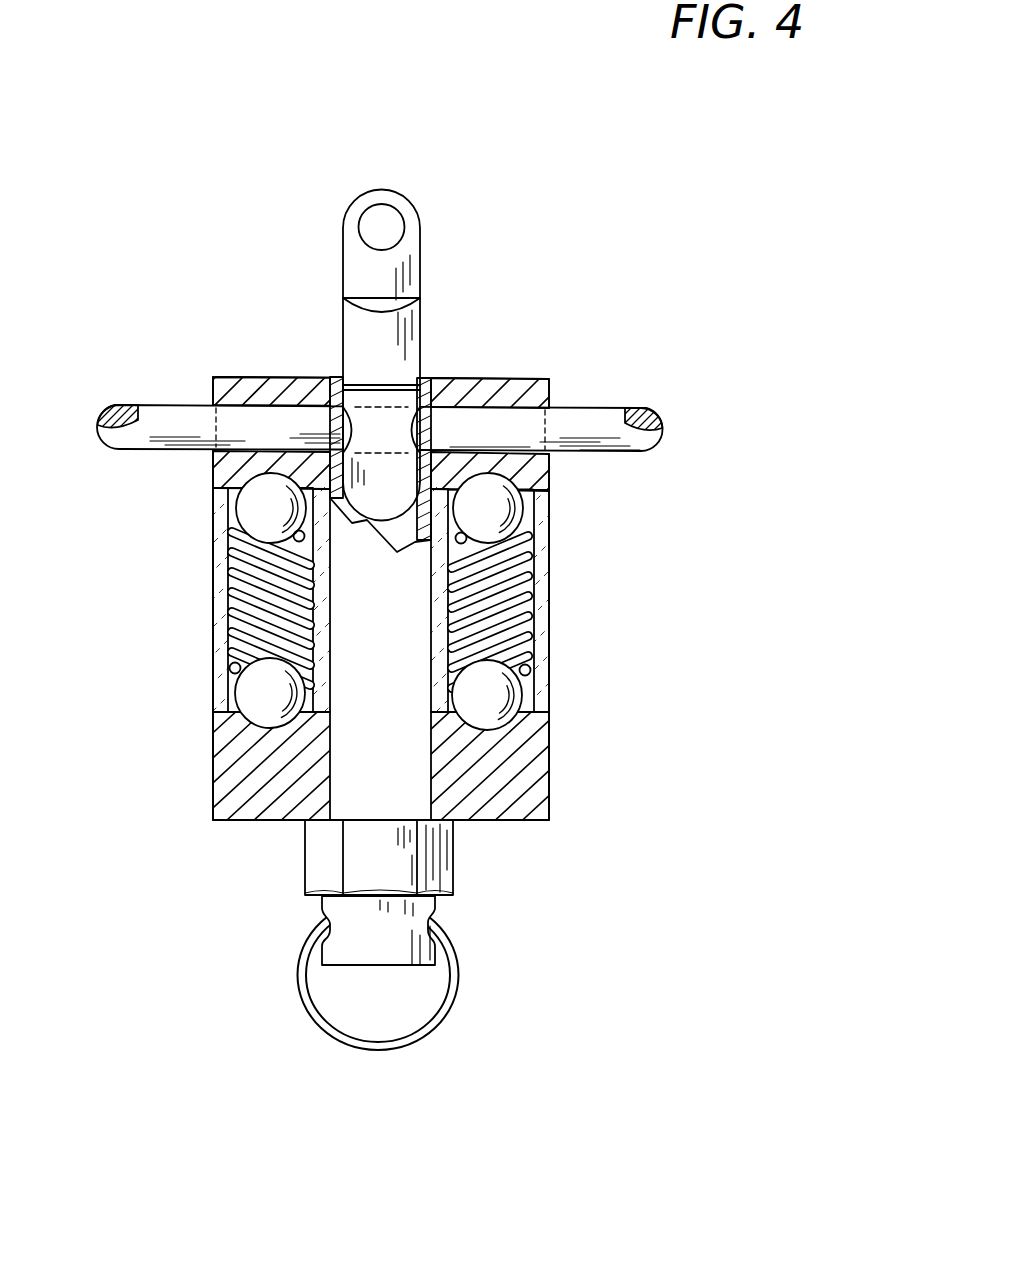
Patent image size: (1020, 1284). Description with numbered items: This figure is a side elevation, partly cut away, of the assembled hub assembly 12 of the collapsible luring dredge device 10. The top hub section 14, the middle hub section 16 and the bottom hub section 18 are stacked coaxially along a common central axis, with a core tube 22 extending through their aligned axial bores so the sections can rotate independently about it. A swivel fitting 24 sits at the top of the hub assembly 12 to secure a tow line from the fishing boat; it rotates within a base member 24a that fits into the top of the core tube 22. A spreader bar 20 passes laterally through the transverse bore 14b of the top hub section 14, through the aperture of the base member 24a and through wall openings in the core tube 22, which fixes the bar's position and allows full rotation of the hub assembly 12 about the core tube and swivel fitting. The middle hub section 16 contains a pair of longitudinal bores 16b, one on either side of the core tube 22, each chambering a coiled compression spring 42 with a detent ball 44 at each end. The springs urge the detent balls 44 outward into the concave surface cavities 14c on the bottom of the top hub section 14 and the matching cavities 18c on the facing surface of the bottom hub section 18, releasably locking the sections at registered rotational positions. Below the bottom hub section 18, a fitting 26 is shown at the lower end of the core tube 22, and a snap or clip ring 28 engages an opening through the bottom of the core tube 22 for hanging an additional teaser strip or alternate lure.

The collapsible luring dredge device 10 is at (187, 237).
The hub assembly 12 is at (518, 379).
The top hub section 14 is at (253, 377).
The transverse bore 14b is at (548, 455).
The concave surface cavities 14c is at (242, 487).
The middle hub section 16 is at (548, 575).
The longitudinal bores 16b is at (548, 625).
The bottom hub section 18 is at (548, 780).
The cavities 18c is at (548, 730).
The spreader bar 20 is at (170, 405).
The core tube 22 is at (342, 377).
The swivel fitting 24 is at (417, 203).
The base member 24a is at (418, 342).
The hex nut 26 is at (453, 855).
The snap or clip ring 28 is at (417, 1042).
The coiled compression spring 42 is at (232, 571).
The detent balls 44 is at (240, 513).